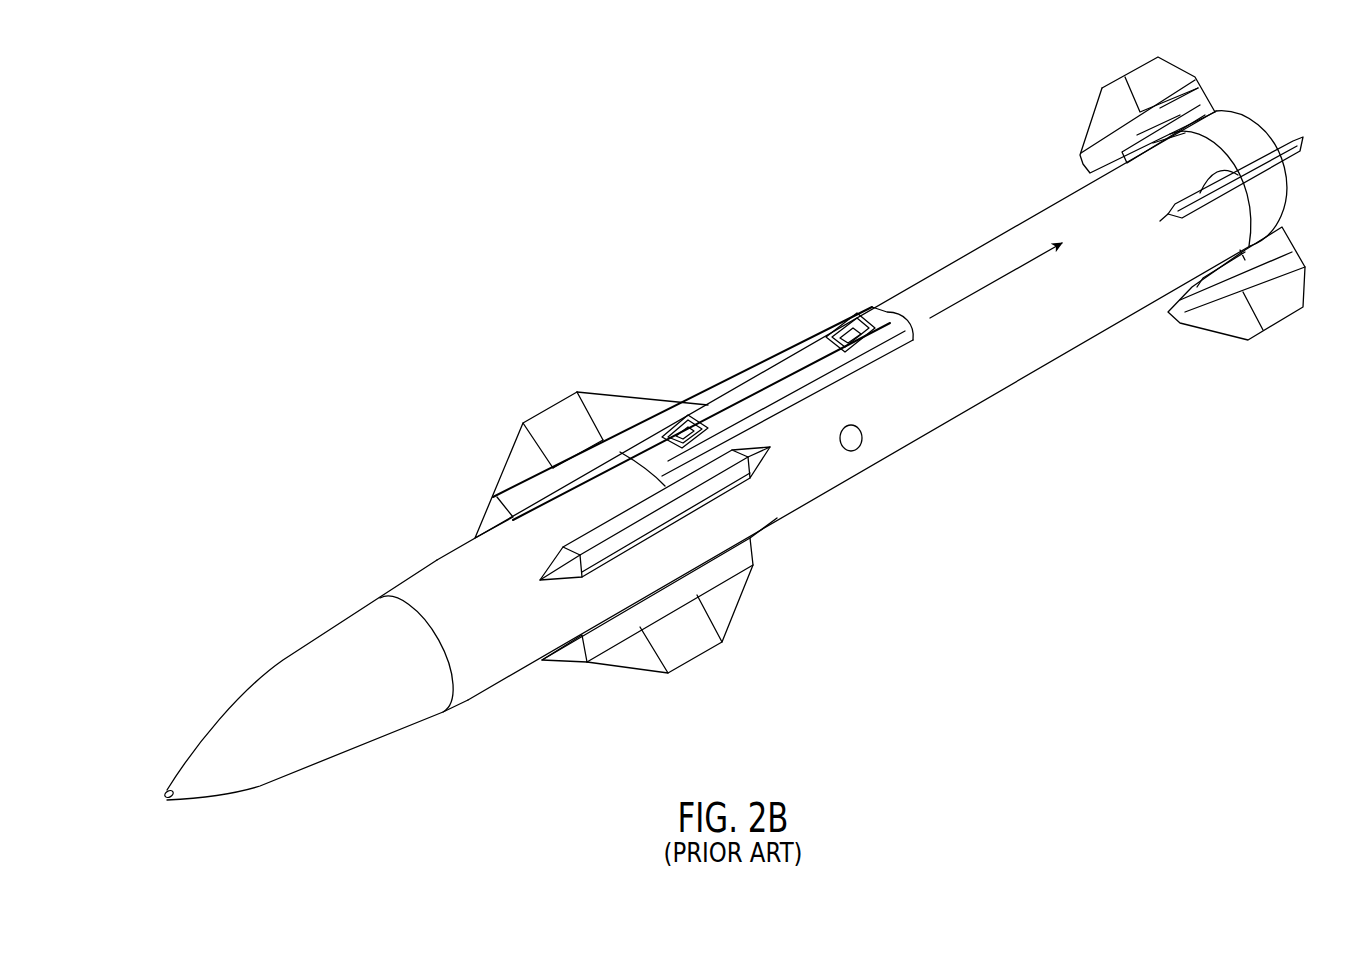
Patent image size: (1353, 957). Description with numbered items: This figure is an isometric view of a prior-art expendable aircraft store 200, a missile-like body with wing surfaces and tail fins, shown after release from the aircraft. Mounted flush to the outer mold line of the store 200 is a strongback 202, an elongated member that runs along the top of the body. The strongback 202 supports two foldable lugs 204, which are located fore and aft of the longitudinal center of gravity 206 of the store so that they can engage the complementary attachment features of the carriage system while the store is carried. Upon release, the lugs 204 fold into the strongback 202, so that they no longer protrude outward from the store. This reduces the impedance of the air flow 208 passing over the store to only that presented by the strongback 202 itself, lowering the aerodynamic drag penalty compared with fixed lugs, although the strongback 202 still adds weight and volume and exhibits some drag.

The expendable aircraft store 200 is at (371, 465).
The strongback 202 is at (757, 367).
The foldable lugs 204 is at (842, 323).
The longitudinal center of gravity 206 is at (860, 455).
The air flow 208 is at (982, 289).